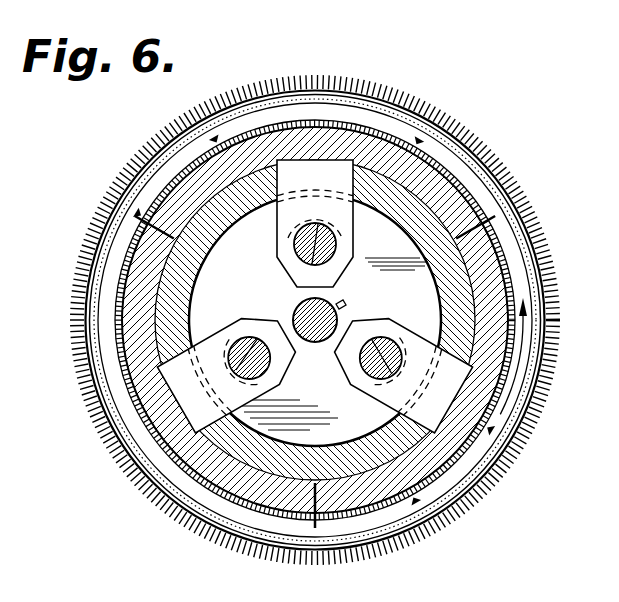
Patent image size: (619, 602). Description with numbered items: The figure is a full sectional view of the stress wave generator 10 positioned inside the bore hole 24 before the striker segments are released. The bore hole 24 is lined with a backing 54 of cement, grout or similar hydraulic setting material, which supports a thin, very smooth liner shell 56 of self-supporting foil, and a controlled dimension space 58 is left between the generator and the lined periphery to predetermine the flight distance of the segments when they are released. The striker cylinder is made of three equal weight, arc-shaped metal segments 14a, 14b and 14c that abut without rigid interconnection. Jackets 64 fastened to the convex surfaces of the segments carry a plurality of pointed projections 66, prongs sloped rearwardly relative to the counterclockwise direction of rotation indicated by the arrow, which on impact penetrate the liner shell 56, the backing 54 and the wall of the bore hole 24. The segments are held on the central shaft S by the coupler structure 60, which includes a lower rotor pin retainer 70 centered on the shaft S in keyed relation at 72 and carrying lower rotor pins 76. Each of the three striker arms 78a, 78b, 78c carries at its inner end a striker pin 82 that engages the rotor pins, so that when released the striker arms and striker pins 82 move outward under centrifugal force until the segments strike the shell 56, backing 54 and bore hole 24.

The stress wave generator 10 is at (100, 166).
The arc-shaped segment 14a is at (360, 500).
The arc-shaped segment 14b is at (212, 500).
The arc-shaped segment 14c is at (197, 173).
The bore hole 24 is at (488, 173).
The backing 54 is at (403, 110).
The liner shell 56 is at (457, 147).
The controlled dimension space 58 is at (352, 115).
The coupler structure 60 is at (430, 297).
The jacket 64 is at (253, 510).
The pointed projections 66 is at (130, 335).
The lower rotor pin retainer 70 is at (205, 283).
The keyed relation 72 is at (340, 310).
The lower rotor pin 76 is at (345, 228).
The striker arm 78a is at (437, 407).
The striker arm 78b is at (178, 432).
The striker arm 78c is at (303, 178).
The striker pin 82 is at (295, 249).
The shaft S is at (300, 312).